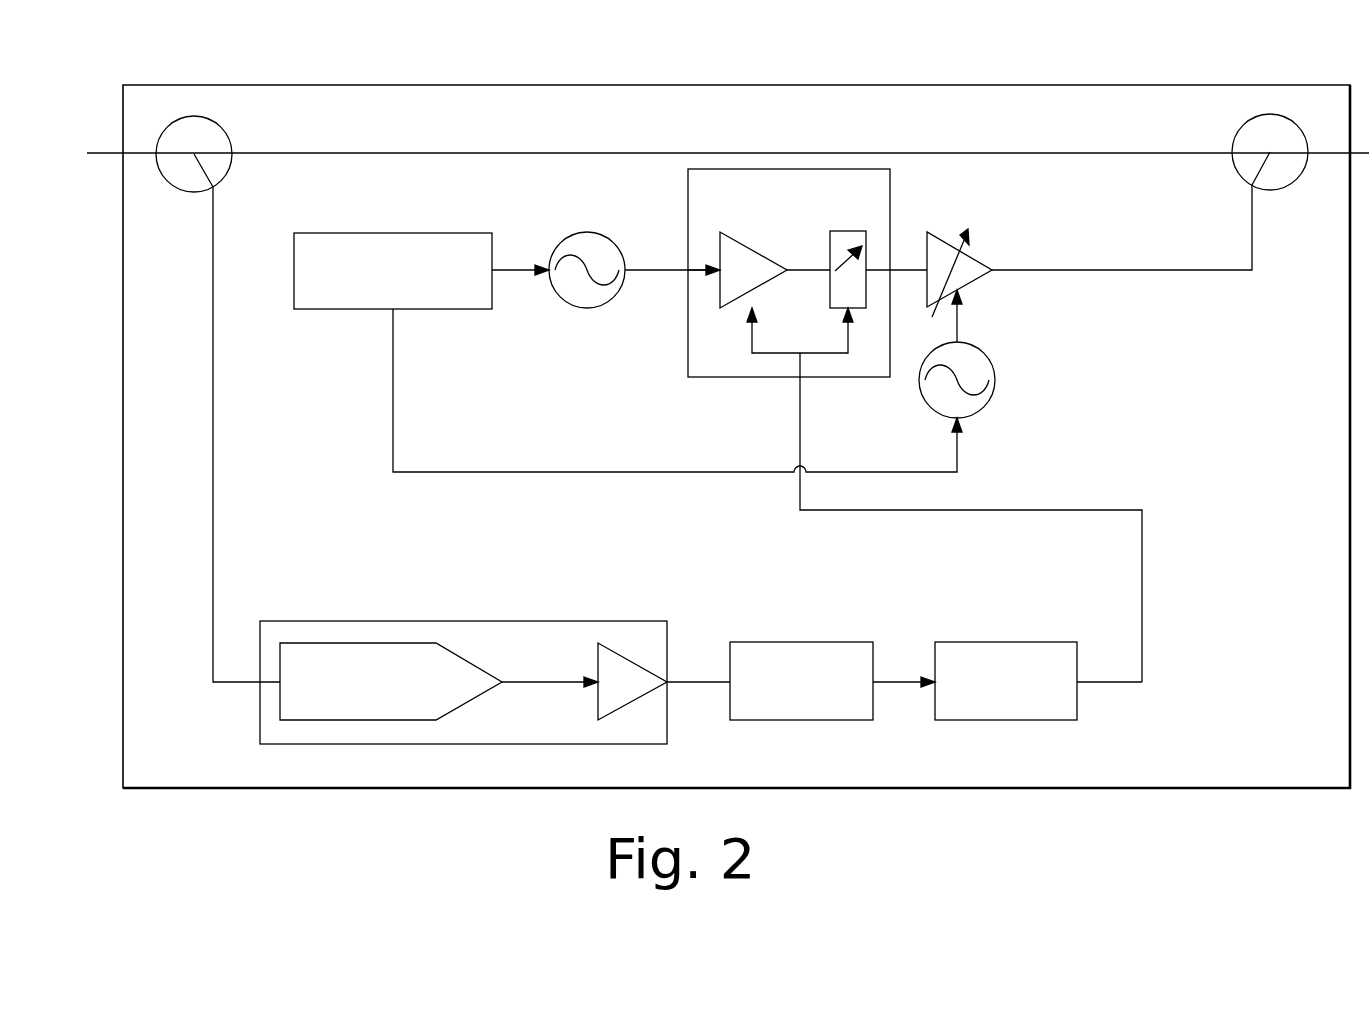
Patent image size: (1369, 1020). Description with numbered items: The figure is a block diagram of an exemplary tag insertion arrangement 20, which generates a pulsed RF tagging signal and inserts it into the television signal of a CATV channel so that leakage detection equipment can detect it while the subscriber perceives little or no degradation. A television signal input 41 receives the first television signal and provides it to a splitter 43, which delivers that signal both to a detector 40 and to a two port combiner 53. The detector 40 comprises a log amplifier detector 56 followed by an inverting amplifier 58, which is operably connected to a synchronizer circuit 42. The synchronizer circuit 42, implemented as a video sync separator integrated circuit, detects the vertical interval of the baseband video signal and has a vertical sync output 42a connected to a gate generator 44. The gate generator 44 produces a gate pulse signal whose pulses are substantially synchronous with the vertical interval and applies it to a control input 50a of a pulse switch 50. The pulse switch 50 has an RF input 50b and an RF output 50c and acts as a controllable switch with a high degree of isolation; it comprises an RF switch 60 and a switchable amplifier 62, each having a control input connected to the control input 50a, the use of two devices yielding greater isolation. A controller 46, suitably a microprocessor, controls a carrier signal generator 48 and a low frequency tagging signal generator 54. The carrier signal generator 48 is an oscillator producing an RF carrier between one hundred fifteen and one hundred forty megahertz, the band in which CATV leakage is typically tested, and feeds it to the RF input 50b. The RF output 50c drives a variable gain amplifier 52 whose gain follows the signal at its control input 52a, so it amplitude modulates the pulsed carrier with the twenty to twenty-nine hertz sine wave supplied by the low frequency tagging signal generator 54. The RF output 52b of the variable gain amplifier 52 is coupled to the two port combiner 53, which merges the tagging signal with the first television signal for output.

The tag insertion arrangement 20 is at (1060, 85).
The television signal input 41 is at (127, 150).
The splitter 43 is at (230, 133).
The two port combiner 53 is at (1235, 128).
The controller 46 is at (322, 233).
The carrier signal generator 48 is at (560, 240).
The pulse switch 50 is at (697, 377).
The control input 50a is at (800, 380).
The RF input 50b is at (680, 266).
The RF output 50c is at (893, 270).
The switchable amplifier 62 is at (763, 258).
The RF switch 60 is at (843, 231).
The variable gain amplifier 52 is at (945, 232).
The control input 52a is at (965, 290).
The RF output 52b is at (1000, 262).
The low frequency tagging signal generator 54 is at (982, 410).
The detector 40 is at (300, 621).
The log amplifier detector 56 is at (402, 643).
The amplifier 58 is at (630, 658).
The synchronizer circuit 42 is at (752, 642).
The vertical sync output 42a is at (878, 678).
The gate generator 44 is at (1050, 642).